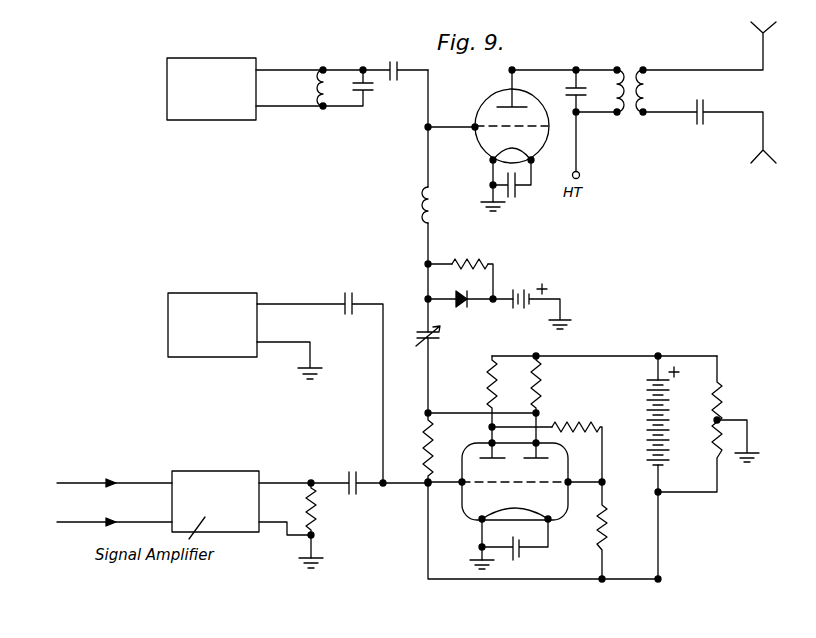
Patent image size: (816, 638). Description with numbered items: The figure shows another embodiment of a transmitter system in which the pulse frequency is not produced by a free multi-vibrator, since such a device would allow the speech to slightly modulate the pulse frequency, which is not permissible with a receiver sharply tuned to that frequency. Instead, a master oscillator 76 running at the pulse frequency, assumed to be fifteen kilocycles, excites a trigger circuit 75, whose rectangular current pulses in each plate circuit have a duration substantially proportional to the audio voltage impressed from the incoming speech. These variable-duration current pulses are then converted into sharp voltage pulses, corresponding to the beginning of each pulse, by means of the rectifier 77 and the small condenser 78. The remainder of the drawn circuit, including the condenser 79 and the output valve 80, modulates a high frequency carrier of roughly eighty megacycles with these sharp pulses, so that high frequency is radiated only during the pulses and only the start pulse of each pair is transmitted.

The trigger circuit 75 is at (557, 502).
The master oscillator 76 is at (155, 362).
The rectifier 77 is at (463, 308).
The small condenser 78 is at (205, 120).
The condenser 79 is at (345, 88).
The output valve 80 is at (496, 101).